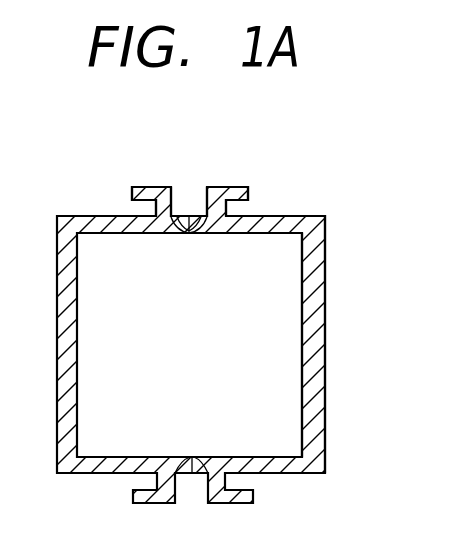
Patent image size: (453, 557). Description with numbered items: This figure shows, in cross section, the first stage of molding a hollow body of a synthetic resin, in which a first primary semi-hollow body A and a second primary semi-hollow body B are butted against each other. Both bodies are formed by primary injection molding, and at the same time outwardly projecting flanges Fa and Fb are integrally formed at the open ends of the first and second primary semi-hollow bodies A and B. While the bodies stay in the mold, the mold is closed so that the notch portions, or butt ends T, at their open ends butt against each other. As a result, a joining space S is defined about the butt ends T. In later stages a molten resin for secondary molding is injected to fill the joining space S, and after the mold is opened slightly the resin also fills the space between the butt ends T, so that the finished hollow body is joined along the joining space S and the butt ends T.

The first primary semi-hollow body A is at (67, 282).
The second primary semi-hollow body B is at (326, 226).
The outwardly projecting flange Fa is at (141, 195).
The outwardly projecting flange Fb is at (237, 195).
The joining space S is at (189, 195).
The butt ends T is at (172, 236).